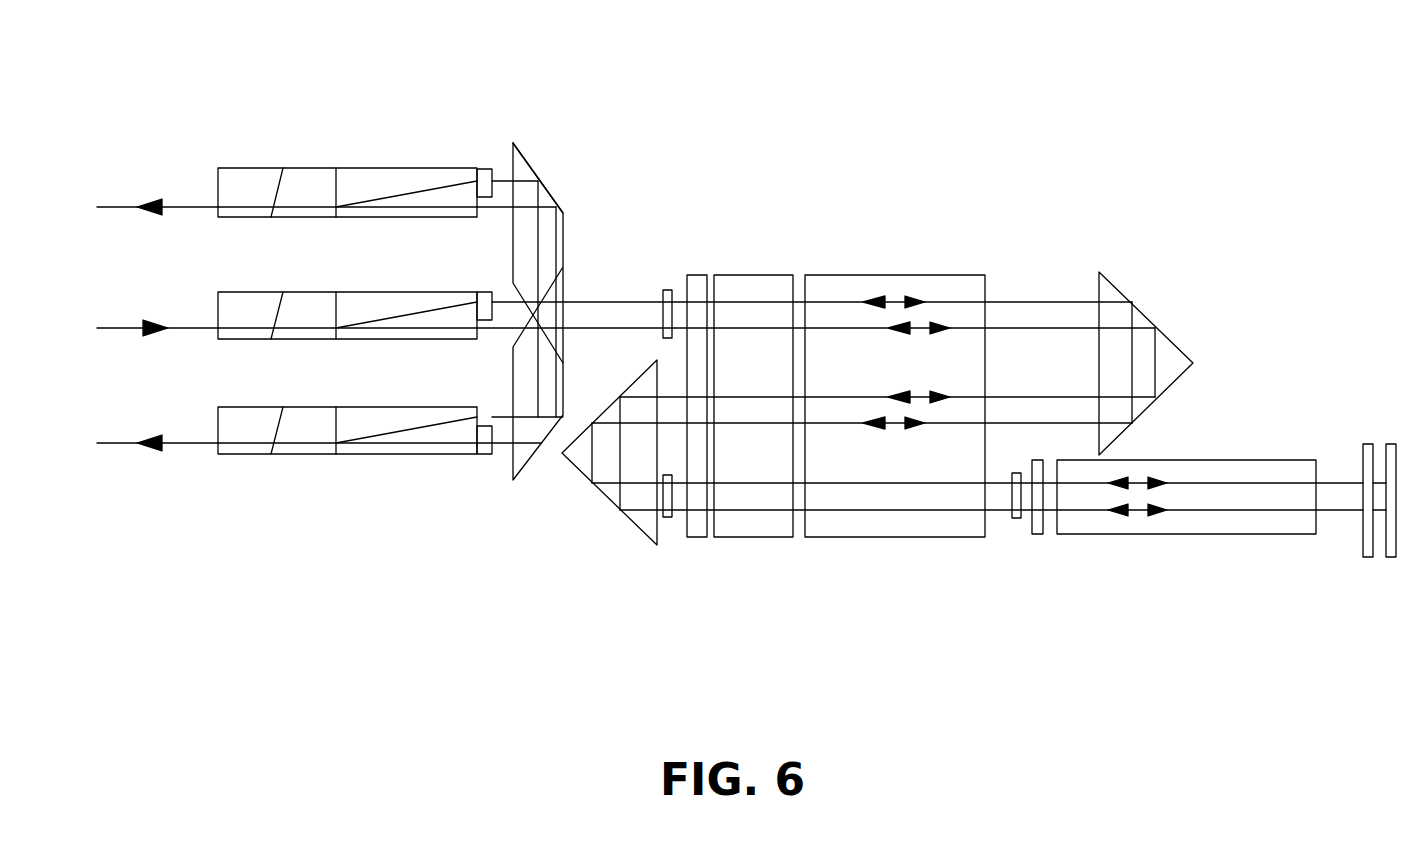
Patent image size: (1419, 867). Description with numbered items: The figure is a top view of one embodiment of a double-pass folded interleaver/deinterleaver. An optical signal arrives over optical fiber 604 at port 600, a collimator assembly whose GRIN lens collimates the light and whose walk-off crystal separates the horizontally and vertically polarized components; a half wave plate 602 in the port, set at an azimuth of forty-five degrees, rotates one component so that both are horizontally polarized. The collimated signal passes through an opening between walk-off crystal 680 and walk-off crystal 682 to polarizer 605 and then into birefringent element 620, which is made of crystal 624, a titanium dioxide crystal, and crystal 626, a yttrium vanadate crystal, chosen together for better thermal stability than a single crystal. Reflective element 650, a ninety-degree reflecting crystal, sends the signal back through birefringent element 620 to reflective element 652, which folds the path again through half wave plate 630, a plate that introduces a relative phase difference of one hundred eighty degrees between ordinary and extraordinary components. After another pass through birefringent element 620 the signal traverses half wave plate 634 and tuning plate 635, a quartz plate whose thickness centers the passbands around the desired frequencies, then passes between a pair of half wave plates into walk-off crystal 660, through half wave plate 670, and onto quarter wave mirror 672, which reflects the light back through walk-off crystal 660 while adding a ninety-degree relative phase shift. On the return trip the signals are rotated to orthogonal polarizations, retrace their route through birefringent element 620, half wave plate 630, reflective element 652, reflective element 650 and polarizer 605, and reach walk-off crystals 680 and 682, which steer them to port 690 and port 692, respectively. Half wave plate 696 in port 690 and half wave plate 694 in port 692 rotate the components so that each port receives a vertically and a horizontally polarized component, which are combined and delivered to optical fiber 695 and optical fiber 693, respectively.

The port 600 is at (392, 292).
The half wave plate 602 is at (482, 292).
The optical fiber 604 is at (115, 328).
The polarizer 605 is at (668, 290).
The birefringent element 620 is at (718, 547).
The crystal 624 is at (755, 275).
The crystal 626 is at (905, 275).
The half wave plate 630 is at (672, 517).
The half wave plate 634 is at (1016, 518).
The tuning plate 635 is at (697, 537).
The reflective element 650 is at (1175, 340).
The reflective element 652 is at (637, 527).
The walk-off crystal 660 is at (1230, 534).
The half wave plate 670 is at (1368, 444).
The quarter wave mirror 672 is at (1391, 557).
The walk-off crystal 680 is at (513, 480).
The walk-off crystal 682 is at (513, 143).
The port 690 is at (393, 457).
The port 692 is at (395, 168).
The optical fiber 693 is at (117, 207).
The half wave plate 694 is at (482, 168).
The optical fiber 695 is at (117, 443).
The half wave plate 696 is at (482, 456).